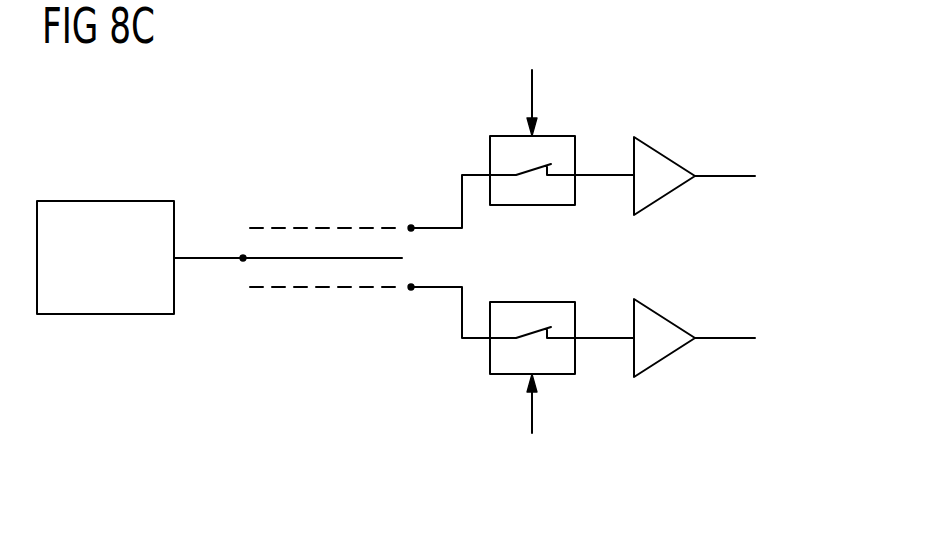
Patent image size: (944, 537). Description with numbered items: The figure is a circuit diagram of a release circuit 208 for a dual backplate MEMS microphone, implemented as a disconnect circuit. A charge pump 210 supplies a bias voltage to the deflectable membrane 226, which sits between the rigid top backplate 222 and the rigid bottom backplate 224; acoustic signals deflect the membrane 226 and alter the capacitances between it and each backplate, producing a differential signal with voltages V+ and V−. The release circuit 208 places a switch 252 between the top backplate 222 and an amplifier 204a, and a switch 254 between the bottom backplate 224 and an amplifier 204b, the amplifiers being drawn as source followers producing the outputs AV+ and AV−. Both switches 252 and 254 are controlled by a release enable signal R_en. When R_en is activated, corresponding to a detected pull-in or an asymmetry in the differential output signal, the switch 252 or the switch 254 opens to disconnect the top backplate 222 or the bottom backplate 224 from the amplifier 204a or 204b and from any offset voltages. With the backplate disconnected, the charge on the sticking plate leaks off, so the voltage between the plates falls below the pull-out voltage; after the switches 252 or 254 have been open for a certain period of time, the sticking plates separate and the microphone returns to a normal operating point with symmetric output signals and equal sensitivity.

The charge pump 210 is at (105, 200).
The deflectable membrane 226 is at (257, 257).
The top backplate 222 is at (325, 227).
The bottom backplate 224 is at (325, 288).
The release circuit 208 is at (552, 251).
The switch 252 is at (525, 167).
The switch 254 is at (520, 345).
The amplifier 204a is at (688, 127).
The amplifier 204b is at (688, 290).